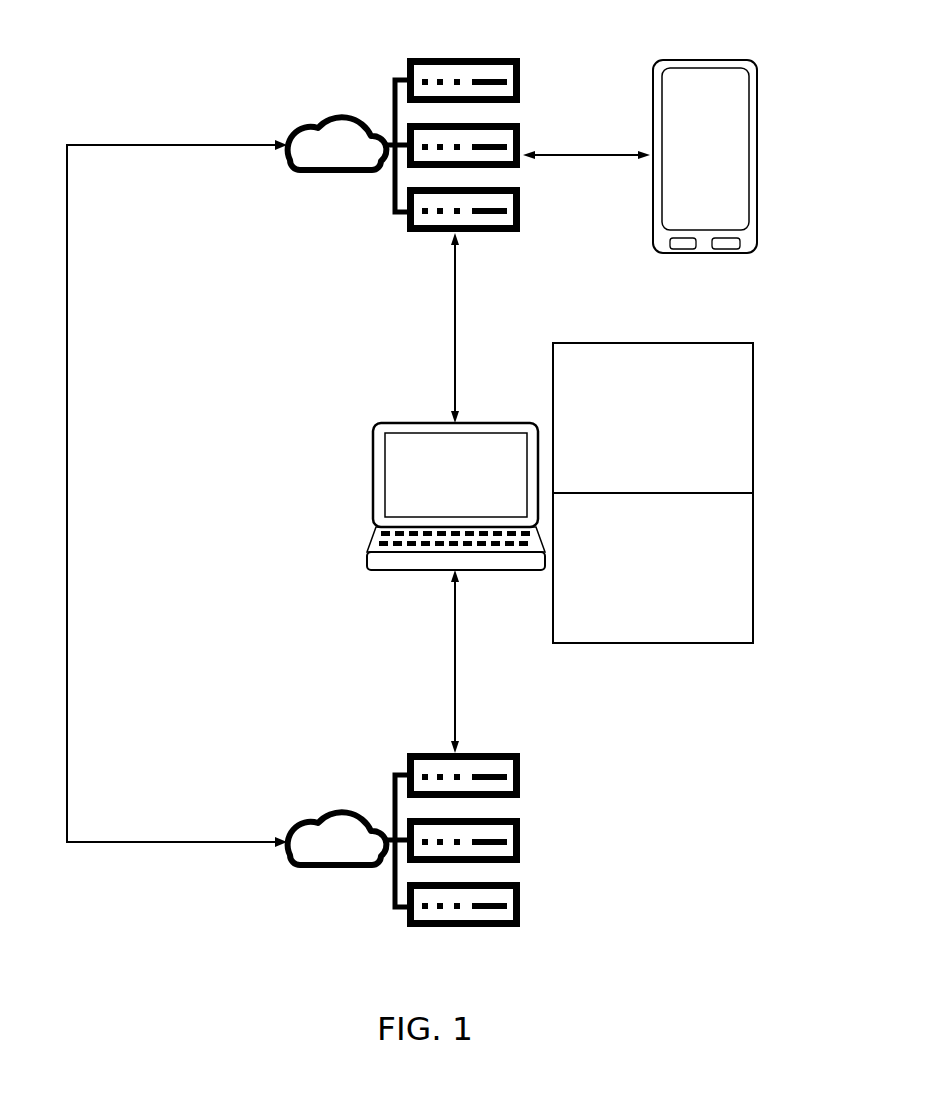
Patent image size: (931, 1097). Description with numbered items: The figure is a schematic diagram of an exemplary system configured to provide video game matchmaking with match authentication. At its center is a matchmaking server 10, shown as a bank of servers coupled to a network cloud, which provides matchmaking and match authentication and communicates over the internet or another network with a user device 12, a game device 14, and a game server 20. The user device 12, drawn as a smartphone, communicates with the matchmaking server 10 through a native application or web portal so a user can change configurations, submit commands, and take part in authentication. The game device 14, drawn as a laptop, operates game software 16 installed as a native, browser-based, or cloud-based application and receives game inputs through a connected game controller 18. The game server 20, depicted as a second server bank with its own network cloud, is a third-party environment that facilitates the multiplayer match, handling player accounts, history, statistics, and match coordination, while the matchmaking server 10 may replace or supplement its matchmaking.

The matchmaking server 10 is at (460, 57).
The user device 12 is at (706, 58).
The game device 14 is at (412, 422).
The game software 16 is at (753, 375).
The game controller 18 is at (753, 525).
The game server 20 is at (420, 752).